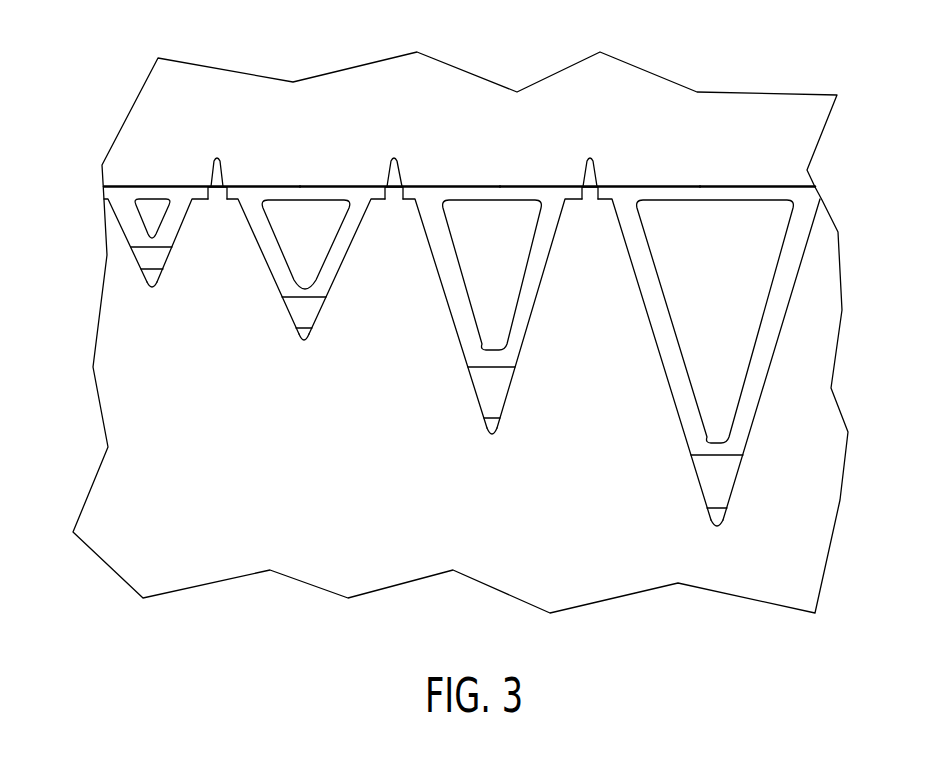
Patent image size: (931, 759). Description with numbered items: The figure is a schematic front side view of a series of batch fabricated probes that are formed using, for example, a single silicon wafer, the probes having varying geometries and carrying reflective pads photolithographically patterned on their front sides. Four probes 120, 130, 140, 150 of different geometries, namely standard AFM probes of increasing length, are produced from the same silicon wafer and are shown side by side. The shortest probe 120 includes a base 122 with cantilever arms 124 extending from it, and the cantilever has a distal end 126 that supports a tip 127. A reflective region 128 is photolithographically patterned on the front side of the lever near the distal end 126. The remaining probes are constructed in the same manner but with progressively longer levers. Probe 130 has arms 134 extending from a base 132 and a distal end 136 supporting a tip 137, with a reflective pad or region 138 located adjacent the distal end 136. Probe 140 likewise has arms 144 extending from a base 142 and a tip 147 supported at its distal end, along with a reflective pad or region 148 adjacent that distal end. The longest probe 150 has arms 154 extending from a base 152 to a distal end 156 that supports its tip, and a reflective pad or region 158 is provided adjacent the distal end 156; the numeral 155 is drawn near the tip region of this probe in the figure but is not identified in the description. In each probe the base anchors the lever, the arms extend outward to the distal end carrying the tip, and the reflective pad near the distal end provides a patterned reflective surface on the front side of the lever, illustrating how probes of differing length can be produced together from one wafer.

The probe 120 is at (178, 132).
The base 122 is at (175, 185).
The cantilever arms 124 is at (173, 220).
The distal end 126 is at (138, 293).
The tip 127 is at (155, 280).
The reflective region 128 is at (153, 258).
The probe 130 is at (346, 117).
The base 132 is at (337, 185).
The arms 134 is at (348, 235).
The distal end 136 is at (297, 368).
The tip 137 is at (310, 340).
The reflective pad/region 138 is at (302, 314).
The probe 140 is at (521, 117).
The base 142 is at (510, 185).
The arms 144 is at (538, 257).
The tip 147 is at (495, 434).
The reflective pad/region 148 is at (493, 397).
The probe 150 is at (717, 146).
The base 152 is at (715, 185).
The arms 154 is at (792, 265).
The fourth trench tip 155 is at (715, 521).
The distal end 156 is at (729, 540).
The reflective pad/region 158 is at (723, 475).